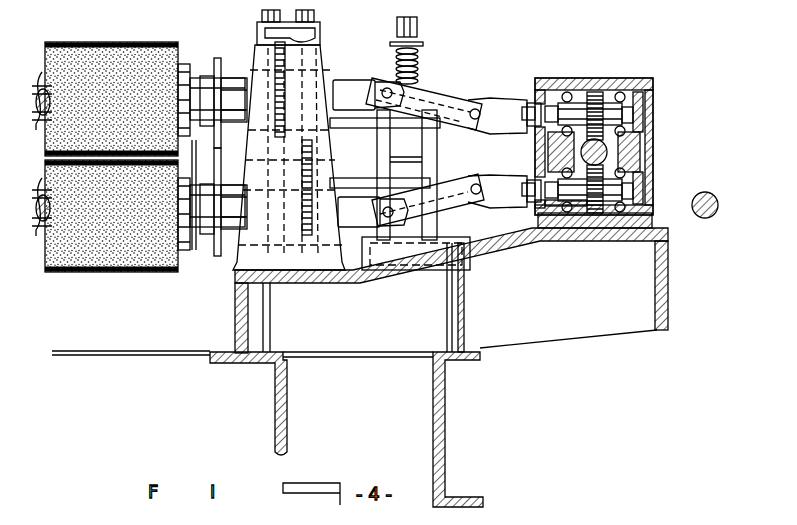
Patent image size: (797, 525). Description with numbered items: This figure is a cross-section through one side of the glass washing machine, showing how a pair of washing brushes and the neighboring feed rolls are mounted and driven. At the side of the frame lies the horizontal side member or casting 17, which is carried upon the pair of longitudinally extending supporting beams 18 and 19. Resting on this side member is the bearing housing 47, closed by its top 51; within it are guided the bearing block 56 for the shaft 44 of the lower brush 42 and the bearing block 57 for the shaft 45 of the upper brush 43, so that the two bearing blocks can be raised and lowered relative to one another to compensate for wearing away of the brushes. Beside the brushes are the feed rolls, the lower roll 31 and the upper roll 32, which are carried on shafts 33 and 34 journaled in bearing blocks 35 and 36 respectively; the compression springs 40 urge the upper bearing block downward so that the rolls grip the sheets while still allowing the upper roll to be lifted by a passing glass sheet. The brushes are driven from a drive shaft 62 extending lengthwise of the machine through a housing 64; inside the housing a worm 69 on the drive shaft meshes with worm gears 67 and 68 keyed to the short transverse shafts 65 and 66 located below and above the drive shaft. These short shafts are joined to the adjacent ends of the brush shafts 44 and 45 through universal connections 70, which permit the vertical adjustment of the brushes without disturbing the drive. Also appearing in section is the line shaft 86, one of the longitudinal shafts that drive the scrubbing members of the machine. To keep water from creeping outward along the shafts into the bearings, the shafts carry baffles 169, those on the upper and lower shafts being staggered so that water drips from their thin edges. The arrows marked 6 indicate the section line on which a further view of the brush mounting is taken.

The alignment marks 6 is at (236, 76).
The side member 17 is at (366, 283).
The supporting beam 18 is at (433, 405).
The supporting beam 19 is at (287, 392).
The lower roll 31 is at (42, 228).
The upper roll 32 is at (47, 86).
The shaft 33 is at (362, 181).
The shaft 34 is at (348, 120).
The bearing block 35 is at (430, 174).
The bearing block 36 is at (440, 98).
The compression spring 40 is at (415, 54).
The lower brush 42 is at (77, 266).
The upper brush 43 is at (146, 42).
The shaft 44 is at (222, 234).
The shaft 45 is at (226, 76).
The bearing housing 47 is at (310, 268).
The top 51 is at (312, 46).
The bearing block 56 is at (296, 290).
The bearing block 57 is at (254, 58).
The drive shaft 62 is at (607, 152).
The housing 64 is at (652, 190).
The horizontal shaft 65 is at (540, 204).
The horizontal shaft 66 is at (641, 82).
The worm gear 67 is at (583, 240).
The worm gear 68 is at (602, 82).
The worm 69 is at (640, 148).
The universal connection 70 is at (436, 240).
The line shaft 86 is at (718, 206).
The baffle 169 is at (192, 252).